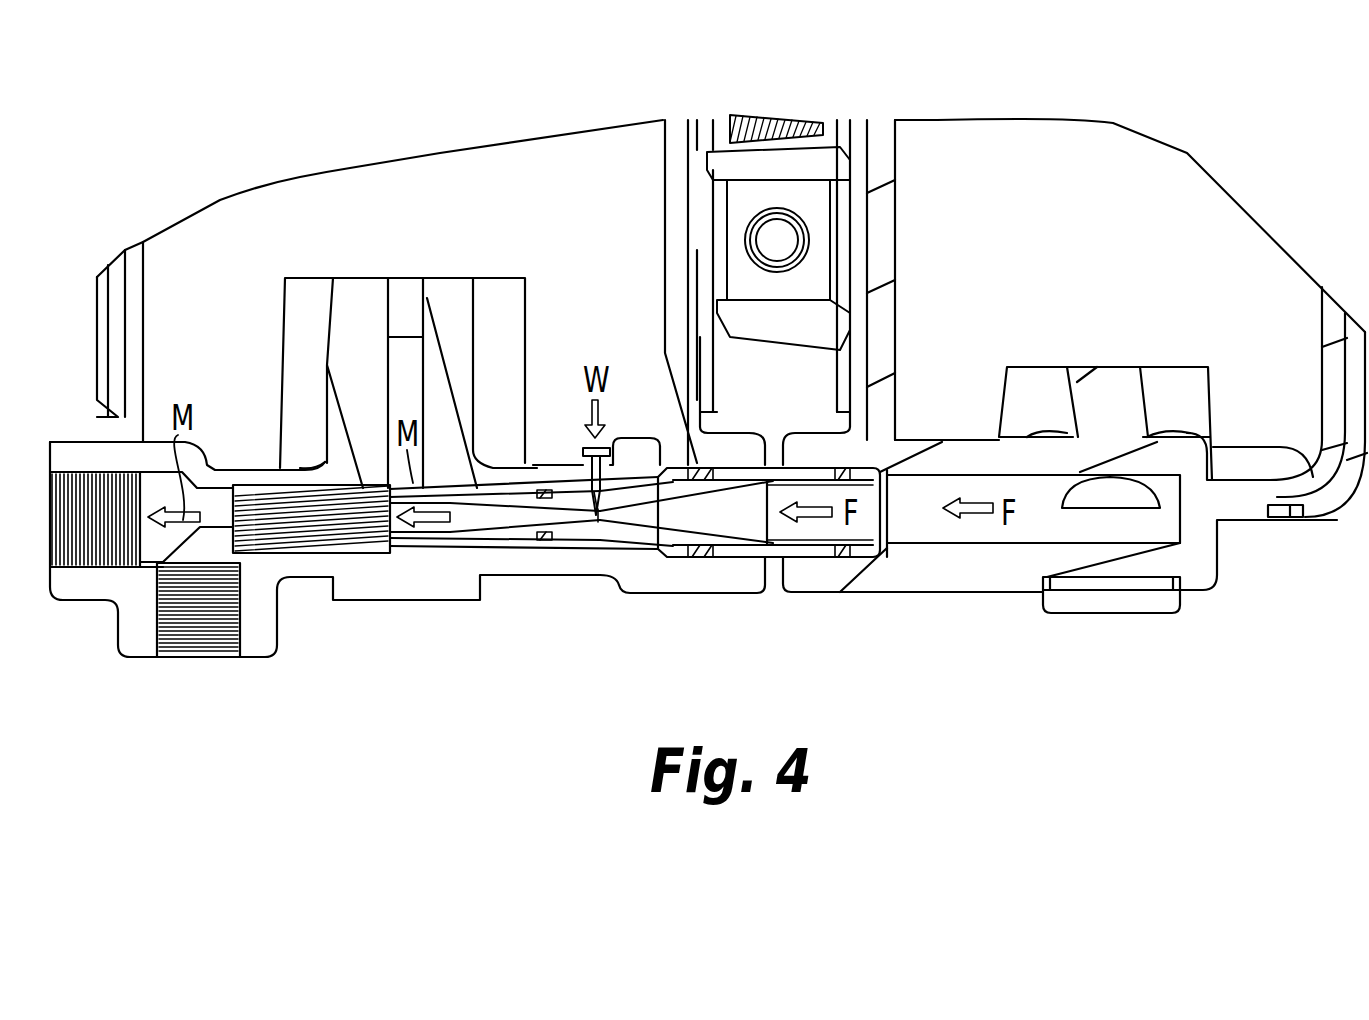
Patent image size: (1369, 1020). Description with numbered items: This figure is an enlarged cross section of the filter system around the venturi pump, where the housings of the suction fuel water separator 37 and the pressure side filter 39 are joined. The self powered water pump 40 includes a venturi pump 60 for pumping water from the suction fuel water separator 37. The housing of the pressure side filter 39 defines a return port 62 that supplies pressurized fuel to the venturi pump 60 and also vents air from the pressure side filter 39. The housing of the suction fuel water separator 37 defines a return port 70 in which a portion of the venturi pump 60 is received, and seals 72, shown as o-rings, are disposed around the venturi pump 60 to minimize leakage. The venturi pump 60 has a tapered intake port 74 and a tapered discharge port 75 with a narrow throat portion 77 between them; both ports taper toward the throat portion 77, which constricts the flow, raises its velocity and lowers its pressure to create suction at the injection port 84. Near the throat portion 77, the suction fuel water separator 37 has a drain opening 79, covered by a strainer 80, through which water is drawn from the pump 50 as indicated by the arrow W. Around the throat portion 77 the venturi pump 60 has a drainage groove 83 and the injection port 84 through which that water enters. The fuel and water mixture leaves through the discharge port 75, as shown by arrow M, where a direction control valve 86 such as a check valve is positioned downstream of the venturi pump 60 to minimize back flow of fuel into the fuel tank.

The suction fuel water separator 37 is at (352, 182).
The pressure side filter 39 is at (1105, 222).
The self powered water pump 40 is at (780, 597).
The pump 50 is at (180, 339).
The venturi pump 60 is at (500, 537).
The return port 62 is at (1052, 520).
The return port 70 is at (618, 550).
The seals 72 is at (852, 468).
The intake port 74 is at (805, 523).
The discharge port 75 is at (460, 516).
The throat portion 77 is at (625, 515).
The drain opening 79 is at (611, 471).
The strainer 80 is at (585, 440).
The drainage groove 83 is at (603, 546).
The injection port 84 is at (573, 497).
The direction control valve 86 is at (307, 537).